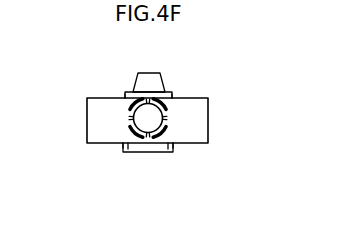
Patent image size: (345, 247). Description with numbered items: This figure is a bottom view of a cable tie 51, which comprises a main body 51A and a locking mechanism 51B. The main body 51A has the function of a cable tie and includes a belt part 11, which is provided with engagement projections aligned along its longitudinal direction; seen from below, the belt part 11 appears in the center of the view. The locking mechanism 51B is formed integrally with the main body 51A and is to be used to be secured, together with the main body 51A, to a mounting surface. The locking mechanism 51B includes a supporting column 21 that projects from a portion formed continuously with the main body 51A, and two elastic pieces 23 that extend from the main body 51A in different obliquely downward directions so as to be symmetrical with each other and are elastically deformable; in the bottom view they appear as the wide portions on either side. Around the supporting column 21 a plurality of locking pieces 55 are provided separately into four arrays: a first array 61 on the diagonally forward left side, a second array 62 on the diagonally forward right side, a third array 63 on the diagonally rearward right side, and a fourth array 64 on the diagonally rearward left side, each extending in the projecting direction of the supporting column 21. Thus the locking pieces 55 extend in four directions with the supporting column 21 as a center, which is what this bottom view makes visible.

The cable tie 51 is at (66, 55).
The main body 51A is at (136, 72).
The locking mechanism 51B is at (161, 112).
The elastic pieces 23 is at (89, 123).
The locking pieces 55 is at (122, 97).
The belt part 11 is at (152, 73).
The supporting column 21 is at (149, 139).
The first array 61 is at (120, 92).
The second array 62 is at (167, 92).
The third array 63 is at (163, 152).
The fourth array 64 is at (132, 152).